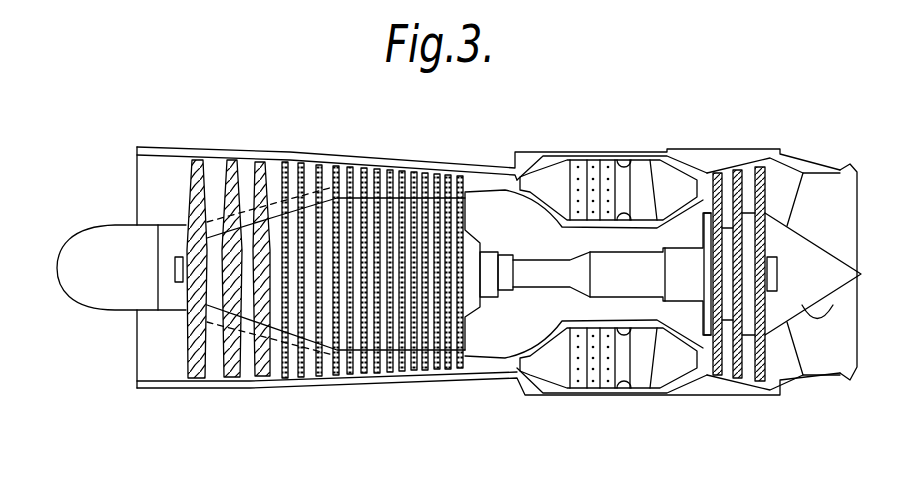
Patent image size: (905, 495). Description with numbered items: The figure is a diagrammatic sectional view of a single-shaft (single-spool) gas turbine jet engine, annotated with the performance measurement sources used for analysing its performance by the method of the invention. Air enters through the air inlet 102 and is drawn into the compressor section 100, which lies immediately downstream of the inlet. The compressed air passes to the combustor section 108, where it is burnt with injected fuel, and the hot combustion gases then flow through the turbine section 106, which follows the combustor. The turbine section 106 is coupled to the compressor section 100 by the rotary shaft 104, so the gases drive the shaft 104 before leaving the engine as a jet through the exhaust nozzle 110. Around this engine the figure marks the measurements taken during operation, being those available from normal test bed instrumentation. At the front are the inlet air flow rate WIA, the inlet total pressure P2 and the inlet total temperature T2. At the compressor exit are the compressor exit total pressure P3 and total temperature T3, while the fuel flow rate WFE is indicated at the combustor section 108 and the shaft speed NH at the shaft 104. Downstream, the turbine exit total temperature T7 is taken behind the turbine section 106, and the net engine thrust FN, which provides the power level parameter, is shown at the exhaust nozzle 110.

The compressor section 100 is at (250, 162).
The air inlet 102 is at (148, 190).
The rotary shaft 104 is at (518, 257).
The turbine section 106 is at (745, 162).
The combustor section 108 is at (609, 162).
The exhaust nozzle 110 is at (847, 185).
The inlet air flow rate WIA is at (92, 322).
The inlet total pressure P2 is at (118, 333).
The inlet total temperature T2 is at (106, 463).
The compressor exit total pressure P3 is at (490, 358).
The compressor exit total temperature T3 is at (490, 466).
The fuel flow rate WFE is at (545, 367).
The shaft speed NH is at (683, 283).
The turbine exit total temperature T7 is at (774, 348).
The net engine thrust FN is at (873, 402).